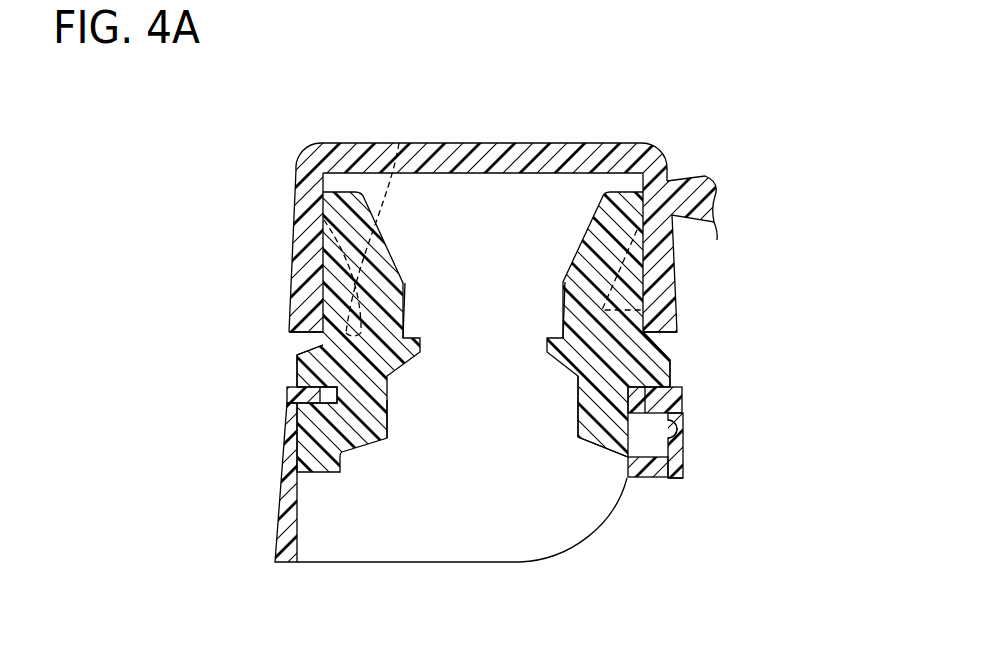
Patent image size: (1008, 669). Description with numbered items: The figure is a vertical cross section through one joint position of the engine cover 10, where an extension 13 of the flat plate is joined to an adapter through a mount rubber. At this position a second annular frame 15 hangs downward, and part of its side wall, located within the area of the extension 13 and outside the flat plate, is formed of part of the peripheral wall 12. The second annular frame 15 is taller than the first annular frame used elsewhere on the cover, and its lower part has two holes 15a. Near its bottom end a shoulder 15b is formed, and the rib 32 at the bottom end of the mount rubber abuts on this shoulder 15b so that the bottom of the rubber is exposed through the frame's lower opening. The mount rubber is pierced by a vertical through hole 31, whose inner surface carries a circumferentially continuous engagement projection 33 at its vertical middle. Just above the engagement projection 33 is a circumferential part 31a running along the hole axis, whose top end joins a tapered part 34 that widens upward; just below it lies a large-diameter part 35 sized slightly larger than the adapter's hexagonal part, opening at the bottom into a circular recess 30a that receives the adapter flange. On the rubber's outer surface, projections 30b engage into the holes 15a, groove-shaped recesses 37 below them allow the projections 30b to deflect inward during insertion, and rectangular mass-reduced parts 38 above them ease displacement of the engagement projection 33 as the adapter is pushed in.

The engine cover 10 is at (676, 187).
The peripheral wall 12 is at (294, 204).
The extension 13 is at (585, 143).
The second annular frame 15 is at (673, 260).
The hole 15a is at (297, 340).
The shoulder 15b is at (680, 443).
The recess 30a is at (628, 466).
The projection 30b is at (305, 373).
The through hole 31 is at (422, 345).
The circumferential part 31a is at (405, 307).
The rib 32 is at (683, 463).
The engagement projection 33 is at (562, 367).
The tapered part 34 is at (560, 287).
The large-diameter part 35 is at (388, 402).
The recess 37 is at (293, 405).
The mass-reduced part 38 is at (399, 143).